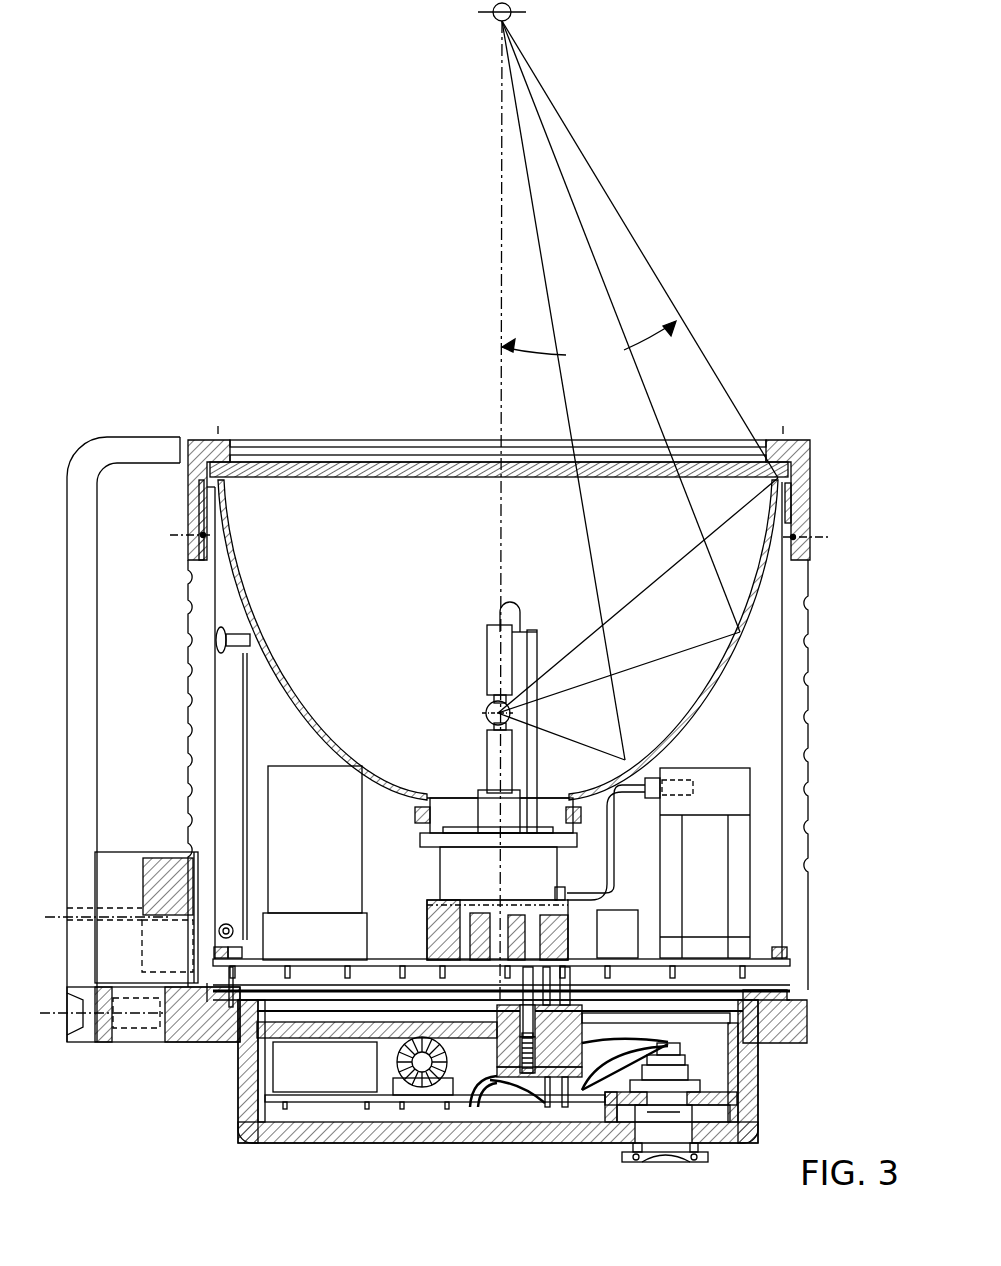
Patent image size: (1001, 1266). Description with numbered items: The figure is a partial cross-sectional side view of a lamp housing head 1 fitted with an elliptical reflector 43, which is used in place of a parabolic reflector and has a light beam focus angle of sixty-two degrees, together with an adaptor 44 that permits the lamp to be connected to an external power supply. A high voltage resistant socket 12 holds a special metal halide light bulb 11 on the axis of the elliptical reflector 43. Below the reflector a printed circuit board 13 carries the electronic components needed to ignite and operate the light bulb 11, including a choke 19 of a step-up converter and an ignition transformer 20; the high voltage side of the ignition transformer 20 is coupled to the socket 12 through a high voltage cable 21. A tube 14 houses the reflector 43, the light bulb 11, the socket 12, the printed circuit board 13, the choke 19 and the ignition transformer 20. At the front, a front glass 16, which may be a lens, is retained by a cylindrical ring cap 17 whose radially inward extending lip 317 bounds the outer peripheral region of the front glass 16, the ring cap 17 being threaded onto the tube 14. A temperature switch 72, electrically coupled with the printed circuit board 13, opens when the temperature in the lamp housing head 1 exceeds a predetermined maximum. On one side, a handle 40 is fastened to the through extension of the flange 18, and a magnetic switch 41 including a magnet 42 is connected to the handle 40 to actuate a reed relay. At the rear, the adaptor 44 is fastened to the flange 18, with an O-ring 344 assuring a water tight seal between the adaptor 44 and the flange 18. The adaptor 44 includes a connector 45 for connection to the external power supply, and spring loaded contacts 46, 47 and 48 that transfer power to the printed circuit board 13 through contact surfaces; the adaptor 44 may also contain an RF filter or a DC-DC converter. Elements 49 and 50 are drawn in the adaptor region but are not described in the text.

The lamp housing head 1 is at (253, 404).
The metal halide light bulb 11 is at (490, 706).
The high voltage resistant socket 12 is at (425, 918).
The printed circuit board 13 is at (775, 972).
The tube 14 is at (803, 937).
The front glass 16 is at (305, 480).
The cylindrical ring cap 17 is at (797, 462).
The flange 18 is at (195, 1030).
The choke 19 is at (297, 812).
The ignition transformer 20 is at (710, 804).
The high voltage cable 21 is at (612, 847).
The handle 40 is at (83, 762).
The magnetic switch 41 is at (120, 870).
The magnet 42 is at (147, 963).
The elliptical reflector 43 is at (258, 612).
The adaptor 44 is at (232, 1197).
The connector 45 is at (672, 1070).
The spring loaded contact 46 is at (530, 1107).
The spring loaded contact 47 is at (547, 1103).
The spring loaded contact 48 is at (568, 1107).
The circuit board 49 is at (318, 1100).
The photocell 50 is at (663, 1148).
The temperature switch 72 is at (216, 640).
The radially inward extending lip 317 is at (803, 675).
The O-ring 344 is at (760, 1045).